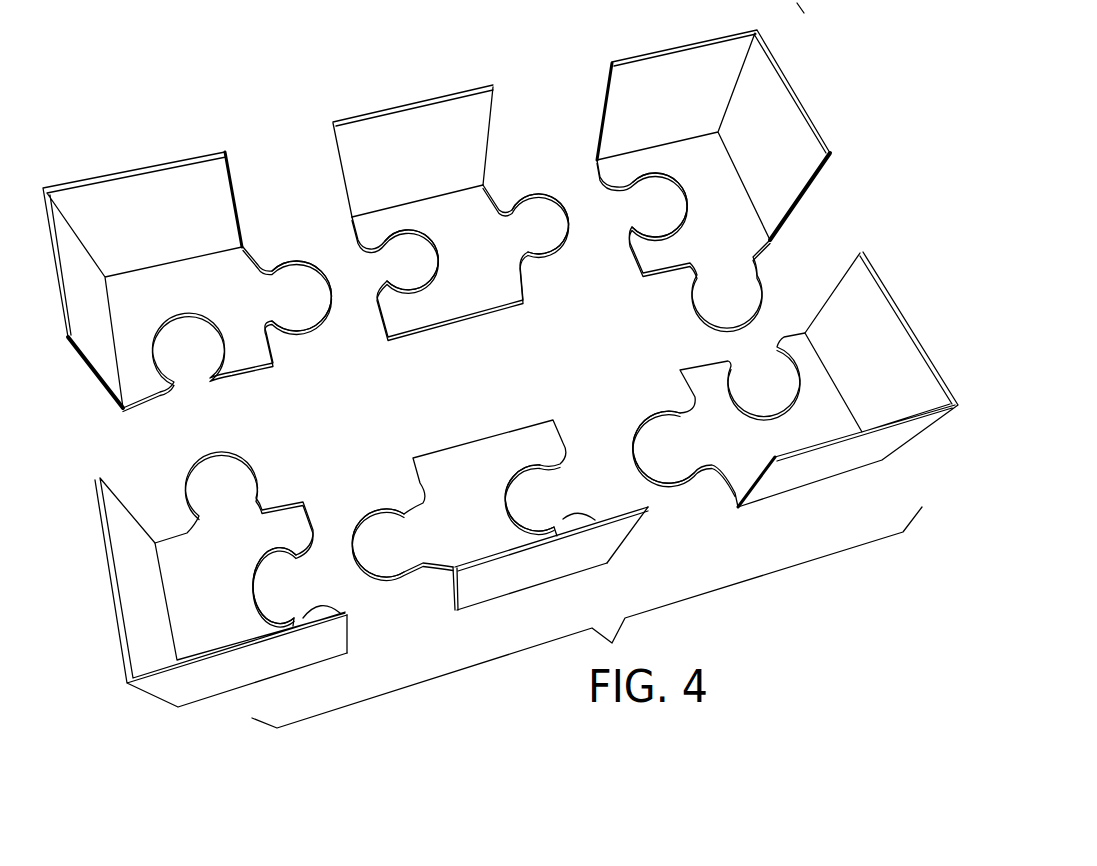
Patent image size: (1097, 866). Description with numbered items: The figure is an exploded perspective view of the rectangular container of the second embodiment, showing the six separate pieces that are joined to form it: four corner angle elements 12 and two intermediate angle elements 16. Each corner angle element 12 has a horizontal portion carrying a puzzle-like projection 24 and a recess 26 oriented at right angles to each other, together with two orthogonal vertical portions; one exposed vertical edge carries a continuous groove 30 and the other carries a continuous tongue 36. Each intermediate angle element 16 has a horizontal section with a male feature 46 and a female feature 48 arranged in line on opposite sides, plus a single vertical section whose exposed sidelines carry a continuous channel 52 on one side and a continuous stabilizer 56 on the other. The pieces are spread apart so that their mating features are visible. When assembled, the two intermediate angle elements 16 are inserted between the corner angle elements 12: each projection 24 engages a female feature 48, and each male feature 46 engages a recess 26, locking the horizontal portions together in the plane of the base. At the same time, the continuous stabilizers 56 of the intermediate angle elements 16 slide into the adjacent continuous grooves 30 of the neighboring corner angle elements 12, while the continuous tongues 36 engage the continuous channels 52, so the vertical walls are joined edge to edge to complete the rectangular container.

The corner angle element 12 is at (500, 355).
The intermediate angle element 16 is at (413, 127).
The projection 24 is at (290, 285).
The recess 26 is at (633, 208).
The continuous groove 30 is at (610, 63).
The continuous tongue 36 is at (227, 155).
The male feature 46 is at (530, 223).
The female feature 48 is at (413, 278).
The continuous channel 52 is at (334, 122).
The continuous stabilizer 56 is at (495, 86).